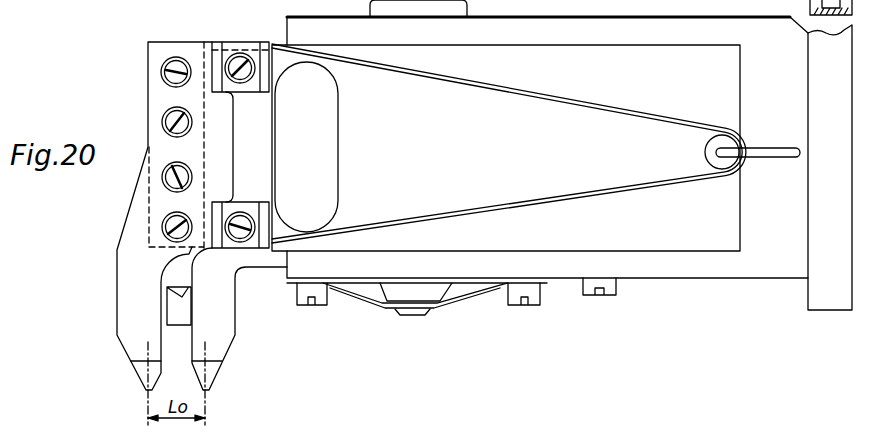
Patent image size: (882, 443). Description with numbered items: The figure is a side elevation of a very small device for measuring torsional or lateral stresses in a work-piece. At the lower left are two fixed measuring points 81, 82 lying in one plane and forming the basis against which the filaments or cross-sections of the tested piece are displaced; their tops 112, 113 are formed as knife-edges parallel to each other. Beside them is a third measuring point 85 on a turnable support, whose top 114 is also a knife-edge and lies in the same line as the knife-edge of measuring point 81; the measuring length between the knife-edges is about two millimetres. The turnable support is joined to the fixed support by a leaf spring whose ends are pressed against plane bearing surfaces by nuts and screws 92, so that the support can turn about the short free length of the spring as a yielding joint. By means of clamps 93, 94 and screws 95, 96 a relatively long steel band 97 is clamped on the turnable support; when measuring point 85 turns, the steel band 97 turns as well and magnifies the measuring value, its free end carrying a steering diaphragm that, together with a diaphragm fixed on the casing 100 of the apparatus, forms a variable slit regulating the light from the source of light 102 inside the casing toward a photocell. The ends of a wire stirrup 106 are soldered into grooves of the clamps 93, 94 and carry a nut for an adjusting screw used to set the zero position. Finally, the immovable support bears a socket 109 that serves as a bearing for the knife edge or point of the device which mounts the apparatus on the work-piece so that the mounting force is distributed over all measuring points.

The measuring point 81 is at (261, 319).
The measuring point 82 is at (222, 320).
The measuring point 85 is at (139, 318).
The screw 92 is at (163, 118).
The clamp 93 is at (228, 78).
The clamp 94 is at (233, 208).
The screw 95 is at (238, 59).
The screw 96 is at (242, 236).
The steel band 97 is at (718, 83).
The casing 100 is at (771, 7).
The source of light 102 is at (427, 289).
The wire stirrup 106 is at (590, 193).
The socket 109 is at (173, 310).
The top of measuring point 112 is at (270, 383).
The top of measuring point 113 is at (209, 390).
The top of measuring point 114 is at (147, 391).